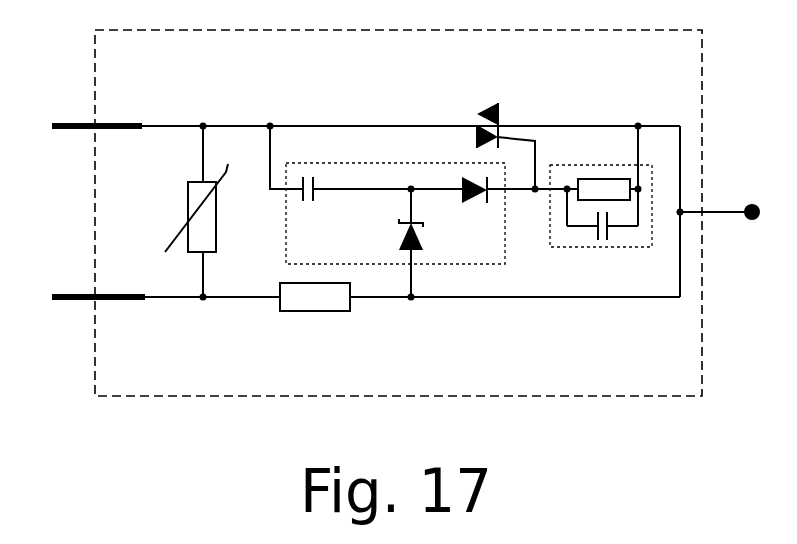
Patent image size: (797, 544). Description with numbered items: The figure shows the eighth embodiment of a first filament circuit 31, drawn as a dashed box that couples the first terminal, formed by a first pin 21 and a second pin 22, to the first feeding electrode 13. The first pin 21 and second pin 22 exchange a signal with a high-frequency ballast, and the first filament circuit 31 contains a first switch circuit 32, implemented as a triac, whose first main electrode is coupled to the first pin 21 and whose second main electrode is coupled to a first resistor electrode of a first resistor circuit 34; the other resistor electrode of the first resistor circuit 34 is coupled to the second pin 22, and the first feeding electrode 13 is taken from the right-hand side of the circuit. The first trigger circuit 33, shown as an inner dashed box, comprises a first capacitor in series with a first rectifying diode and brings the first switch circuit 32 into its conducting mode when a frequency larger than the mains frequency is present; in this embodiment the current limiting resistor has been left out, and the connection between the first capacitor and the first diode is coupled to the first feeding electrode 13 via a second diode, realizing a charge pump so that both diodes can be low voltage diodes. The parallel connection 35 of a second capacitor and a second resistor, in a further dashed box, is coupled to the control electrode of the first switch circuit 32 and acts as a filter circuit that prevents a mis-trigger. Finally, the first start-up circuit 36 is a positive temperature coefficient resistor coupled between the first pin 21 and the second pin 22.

The first feeding electrode 13 is at (722, 211).
The first pin 21 is at (345, 127).
The second pin 22 is at (345, 298).
The first filament circuit 31 is at (670, 393).
The first switch circuit 32 is at (506, 128).
The first trigger circuit 33 is at (350, 160).
The first resistor circuit 34 is at (315, 315).
The parallel connection 35 is at (605, 247).
The first start-up circuit 36 is at (183, 212).